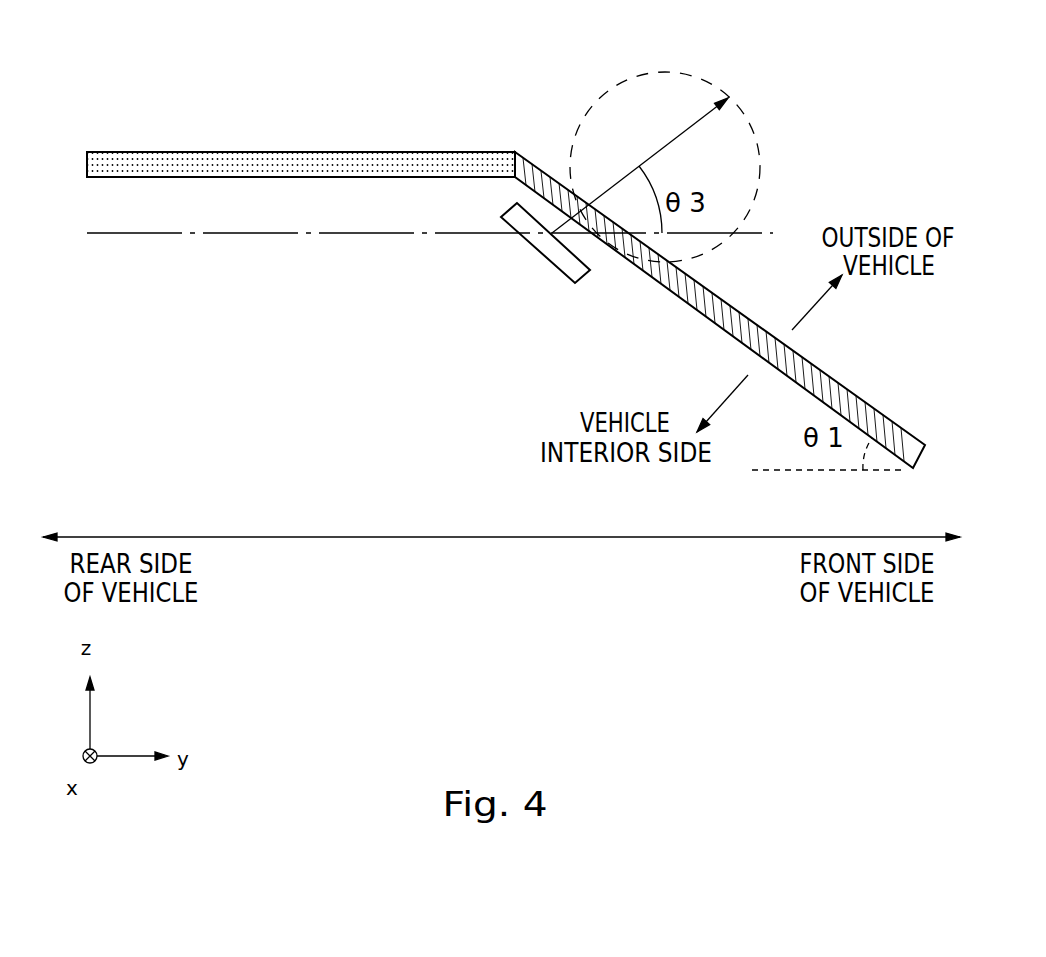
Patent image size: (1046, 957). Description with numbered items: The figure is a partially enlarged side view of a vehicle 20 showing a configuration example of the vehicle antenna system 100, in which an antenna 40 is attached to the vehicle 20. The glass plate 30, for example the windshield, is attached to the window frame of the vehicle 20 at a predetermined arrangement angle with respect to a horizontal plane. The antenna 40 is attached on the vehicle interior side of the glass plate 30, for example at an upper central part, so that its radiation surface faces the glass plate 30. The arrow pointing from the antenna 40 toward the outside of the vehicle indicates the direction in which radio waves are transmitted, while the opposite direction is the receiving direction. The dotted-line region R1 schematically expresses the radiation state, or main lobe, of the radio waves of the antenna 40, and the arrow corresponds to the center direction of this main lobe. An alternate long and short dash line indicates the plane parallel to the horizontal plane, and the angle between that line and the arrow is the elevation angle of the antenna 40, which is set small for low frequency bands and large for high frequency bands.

The vehicle 20 is at (375, 152).
The glass plate 30 is at (875, 408).
The antenna 40 is at (522, 238).
The vehicle antenna system 100 is at (506, 279).
The region R1 is at (683, 72).